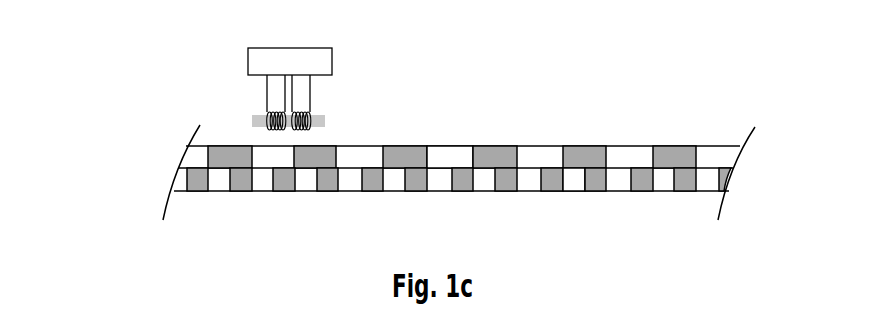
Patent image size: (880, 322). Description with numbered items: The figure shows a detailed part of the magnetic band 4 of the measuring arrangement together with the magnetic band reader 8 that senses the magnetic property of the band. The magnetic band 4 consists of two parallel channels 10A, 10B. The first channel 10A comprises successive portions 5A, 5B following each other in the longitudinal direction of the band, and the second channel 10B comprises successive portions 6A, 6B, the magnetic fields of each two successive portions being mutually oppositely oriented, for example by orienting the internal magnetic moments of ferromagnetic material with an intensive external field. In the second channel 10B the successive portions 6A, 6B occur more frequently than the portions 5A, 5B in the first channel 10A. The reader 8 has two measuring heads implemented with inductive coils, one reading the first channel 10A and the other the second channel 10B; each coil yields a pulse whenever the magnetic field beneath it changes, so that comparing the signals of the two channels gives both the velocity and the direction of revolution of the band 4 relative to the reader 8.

The magnetic band 4 is at (397, 149).
The first successive portion of the first channel 5A is at (405, 158).
The second successive portion of the first channel 5B is at (460, 158).
The first successive portion of the second channel 6A is at (552, 183).
The second successive portion of the second channel 6B is at (573, 183).
The magnetic band reader 8 is at (255, 95).
The first channel 10A is at (395, 112).
The second channel 10B is at (385, 188).